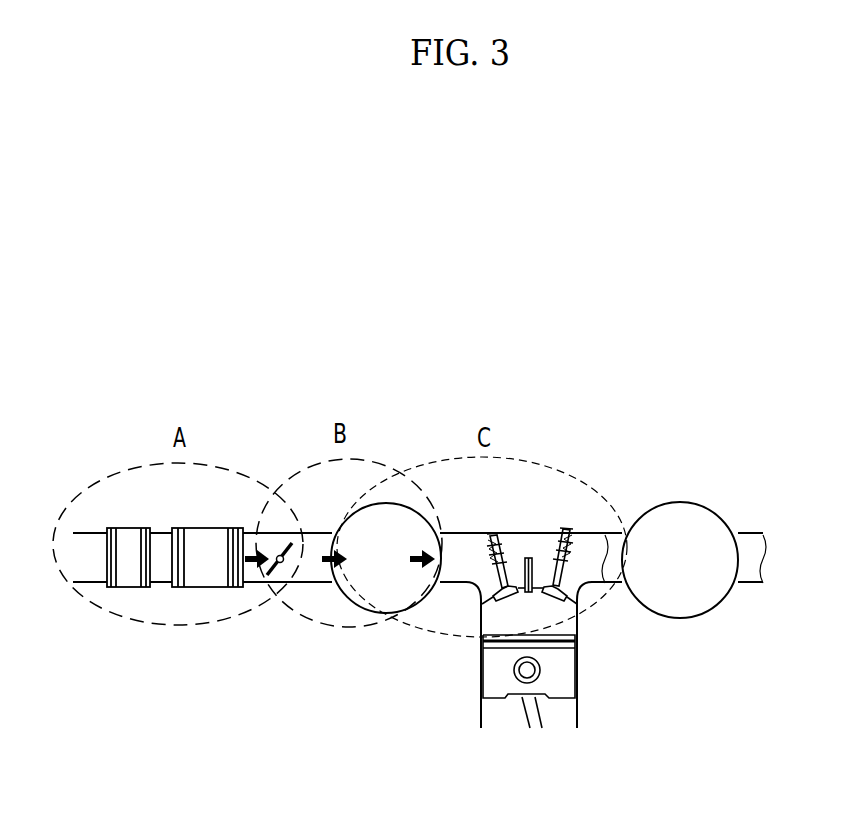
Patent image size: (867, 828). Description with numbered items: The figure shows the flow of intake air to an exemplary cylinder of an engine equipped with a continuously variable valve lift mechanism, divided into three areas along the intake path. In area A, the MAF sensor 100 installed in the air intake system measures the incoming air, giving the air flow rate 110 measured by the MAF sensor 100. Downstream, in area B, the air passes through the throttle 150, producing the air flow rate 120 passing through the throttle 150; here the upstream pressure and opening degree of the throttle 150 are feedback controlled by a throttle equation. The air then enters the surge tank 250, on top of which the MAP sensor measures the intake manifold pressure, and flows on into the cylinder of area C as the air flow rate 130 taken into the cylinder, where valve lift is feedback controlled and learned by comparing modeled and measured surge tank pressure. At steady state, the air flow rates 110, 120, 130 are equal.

The MAF sensor 100 is at (195, 578).
The air flow rate measured by the MAF sensor 110 is at (255, 553).
The air flow rate passing through the throttle 120 is at (328, 552).
The air flow rate taken into the cylinder 130 is at (413, 553).
The throttle 150 is at (281, 563).
The surge tank 250 is at (350, 603).